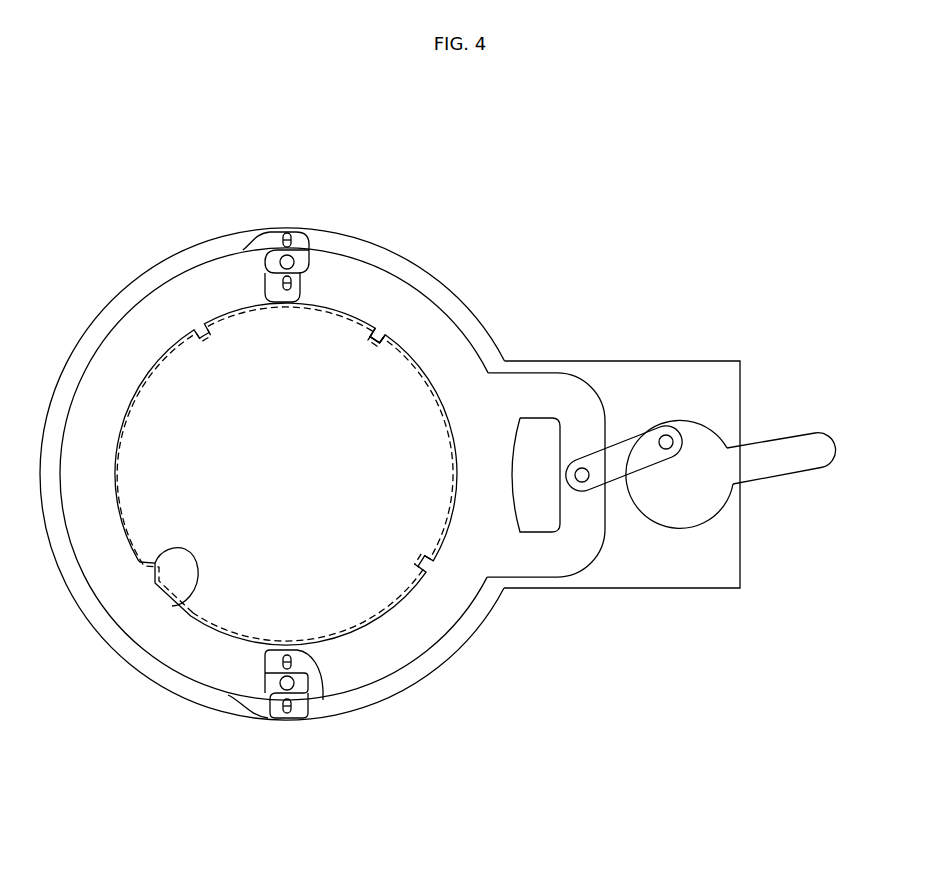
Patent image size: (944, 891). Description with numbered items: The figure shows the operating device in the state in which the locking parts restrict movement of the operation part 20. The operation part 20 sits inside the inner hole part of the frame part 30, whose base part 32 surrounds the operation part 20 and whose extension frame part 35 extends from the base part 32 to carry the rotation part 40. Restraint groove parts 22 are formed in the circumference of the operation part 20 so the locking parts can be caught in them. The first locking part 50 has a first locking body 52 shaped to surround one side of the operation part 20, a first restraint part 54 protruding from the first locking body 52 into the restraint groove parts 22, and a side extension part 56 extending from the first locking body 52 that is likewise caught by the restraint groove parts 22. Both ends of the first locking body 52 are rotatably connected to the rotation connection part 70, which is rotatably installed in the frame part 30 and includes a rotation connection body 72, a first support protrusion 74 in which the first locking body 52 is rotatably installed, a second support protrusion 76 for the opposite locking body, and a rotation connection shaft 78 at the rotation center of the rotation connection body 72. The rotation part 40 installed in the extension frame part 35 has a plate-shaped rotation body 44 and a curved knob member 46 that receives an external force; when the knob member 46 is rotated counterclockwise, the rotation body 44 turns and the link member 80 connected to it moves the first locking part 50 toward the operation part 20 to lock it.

The operation part 20 is at (187, 387).
The restraint groove part 22 is at (190, 588).
The frame part 30 is at (628, 702).
The base part 32 is at (455, 660).
The extension frame part 35 is at (613, 597).
The rotation part 40 is at (725, 466).
The rotation body 44 is at (707, 443).
The knob member 46 is at (817, 450).
The first locking part 50 is at (378, 266).
The first locking body 52 is at (430, 316).
The first restraint part 54 is at (381, 335).
The side extension part 56 is at (560, 393).
The rotation connection part 70 is at (292, 747).
The rotation connection body 72 is at (273, 683).
The first support protrusion 74 is at (310, 666).
The second support protrusion 76 is at (302, 712).
The rotation connection shaft 78 is at (275, 700).
The link member 80 is at (628, 447).